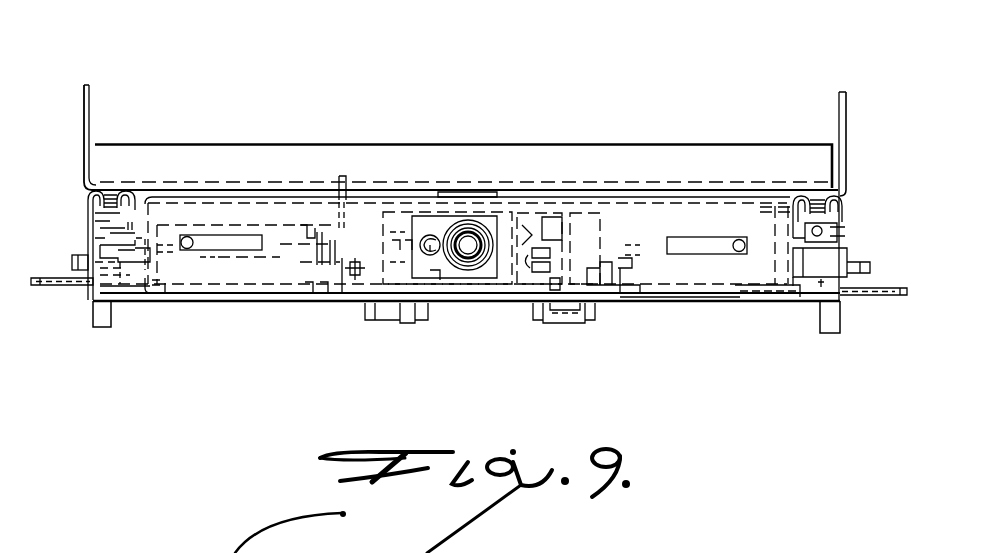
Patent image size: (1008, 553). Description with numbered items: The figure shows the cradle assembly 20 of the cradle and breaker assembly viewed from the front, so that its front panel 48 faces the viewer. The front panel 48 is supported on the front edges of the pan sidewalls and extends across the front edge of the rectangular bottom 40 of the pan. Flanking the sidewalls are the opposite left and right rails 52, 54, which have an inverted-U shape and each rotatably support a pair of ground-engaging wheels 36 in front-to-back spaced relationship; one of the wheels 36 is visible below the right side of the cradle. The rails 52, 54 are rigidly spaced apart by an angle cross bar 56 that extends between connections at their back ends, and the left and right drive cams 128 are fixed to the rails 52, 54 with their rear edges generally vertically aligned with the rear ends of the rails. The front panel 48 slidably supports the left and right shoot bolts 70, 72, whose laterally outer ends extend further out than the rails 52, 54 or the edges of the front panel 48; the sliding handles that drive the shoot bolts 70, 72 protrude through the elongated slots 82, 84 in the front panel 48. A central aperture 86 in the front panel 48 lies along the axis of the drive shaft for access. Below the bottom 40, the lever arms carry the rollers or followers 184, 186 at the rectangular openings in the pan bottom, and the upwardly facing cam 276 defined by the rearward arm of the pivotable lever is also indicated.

The cradle assembly 20 is at (571, 53).
The drive cam 128 is at (838, 104).
The angle cross bar 56 is at (572, 155).
The left rail 52 is at (90, 197).
The right rail 54 is at (838, 210).
The bottom of the pan 40 is at (197, 301).
The cam 276 is at (346, 176).
The elongated slot 82 is at (217, 235).
The elongated slot 84 is at (705, 250).
The central aperture 86 is at (470, 262).
The front panel 48 is at (710, 283).
The left shoot bolt 70 is at (43, 283).
The right shoot bolt 72 is at (897, 295).
The wheel 36 is at (830, 333).
The roller or follower 184 is at (393, 322).
The roller or follower 186 is at (570, 322).